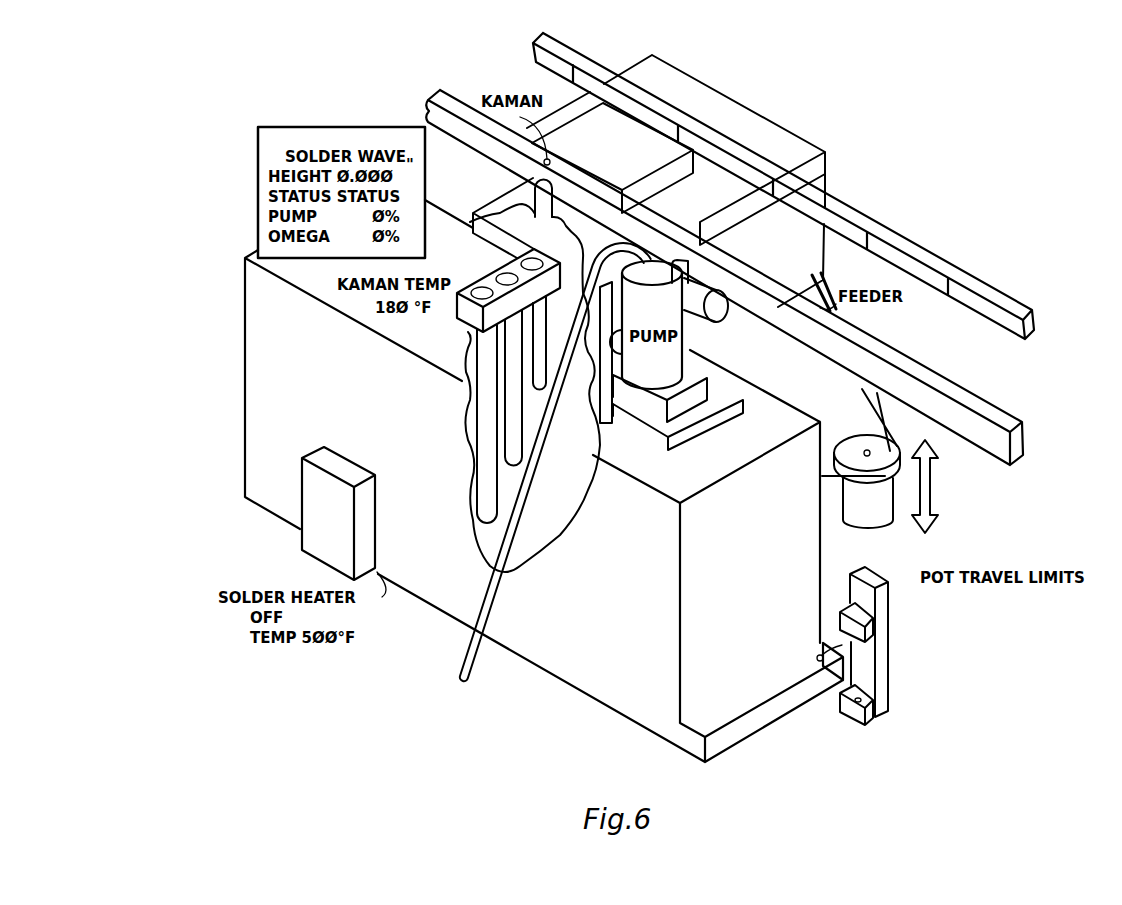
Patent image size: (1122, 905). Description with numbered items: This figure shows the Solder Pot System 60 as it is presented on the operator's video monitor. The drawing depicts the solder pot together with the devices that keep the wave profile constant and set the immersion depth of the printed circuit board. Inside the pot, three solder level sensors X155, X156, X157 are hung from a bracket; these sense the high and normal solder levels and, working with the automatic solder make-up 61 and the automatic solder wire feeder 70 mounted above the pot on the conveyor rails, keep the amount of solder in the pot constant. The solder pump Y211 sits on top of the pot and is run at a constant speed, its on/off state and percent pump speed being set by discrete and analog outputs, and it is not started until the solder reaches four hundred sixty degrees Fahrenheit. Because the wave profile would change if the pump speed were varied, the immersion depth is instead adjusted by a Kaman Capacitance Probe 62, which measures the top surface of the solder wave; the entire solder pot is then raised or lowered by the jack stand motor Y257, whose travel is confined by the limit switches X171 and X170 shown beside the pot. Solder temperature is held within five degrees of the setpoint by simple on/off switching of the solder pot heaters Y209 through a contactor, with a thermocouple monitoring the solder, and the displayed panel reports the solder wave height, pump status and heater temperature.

The Solder Pot System 60 is at (545, 669).
The automatic solder make-up 61 is at (549, 384).
The Kaman Capacitance Probe 62 is at (488, 245).
The solder level sensor X155 is at (541, 390).
The solder level sensor X156 is at (526, 462).
The solder level sensor X157 is at (504, 514).
The automatic solder wire feeder 70 is at (697, 326).
The solder pump Y211 is at (690, 272).
The solder pot heaters Y209 is at (303, 535).
The jack stand motor Y257 is at (846, 520).
The limit switch X171 is at (875, 630).
The limit switch X170 is at (878, 717).